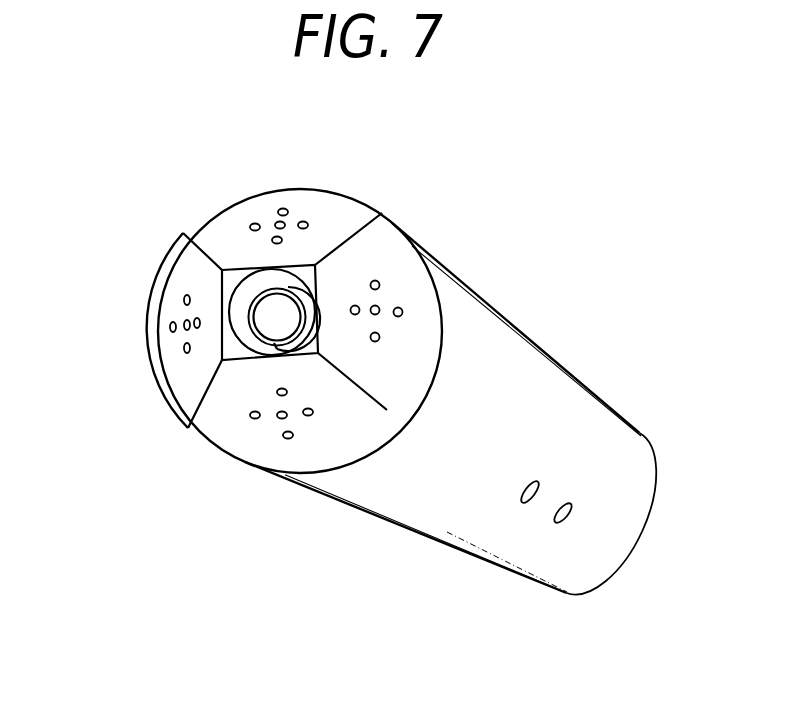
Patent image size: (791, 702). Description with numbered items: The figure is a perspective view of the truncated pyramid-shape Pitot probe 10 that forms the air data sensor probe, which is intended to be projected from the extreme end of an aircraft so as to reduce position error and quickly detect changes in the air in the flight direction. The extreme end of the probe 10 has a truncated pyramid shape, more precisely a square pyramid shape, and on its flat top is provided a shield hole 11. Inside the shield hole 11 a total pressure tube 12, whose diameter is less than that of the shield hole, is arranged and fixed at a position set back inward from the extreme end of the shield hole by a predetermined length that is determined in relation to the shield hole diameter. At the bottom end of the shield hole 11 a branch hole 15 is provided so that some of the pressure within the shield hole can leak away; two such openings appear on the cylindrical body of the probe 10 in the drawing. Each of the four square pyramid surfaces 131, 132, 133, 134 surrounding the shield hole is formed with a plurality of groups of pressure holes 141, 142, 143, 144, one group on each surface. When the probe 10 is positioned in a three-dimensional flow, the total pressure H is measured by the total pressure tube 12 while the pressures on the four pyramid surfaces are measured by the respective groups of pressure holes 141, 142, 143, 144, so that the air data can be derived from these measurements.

The truncated pyramid-shape Pitot probe 10 is at (410, 391).
The shield hole 11 is at (247, 405).
The total pressure tube 12 is at (343, 231).
The square pyramid surface 131 is at (270, 203).
The square pyramid surface 132 is at (449, 308).
The square pyramid surface 133 is at (257, 465).
The square pyramid surface 134 is at (130, 334).
The group of pressure holes 141 is at (303, 172).
The group of pressure holes 142 is at (437, 250).
The group of pressure holes 143 is at (265, 474).
The group of pressure holes 144 is at (131, 322).
The branch hole 15 is at (530, 568).